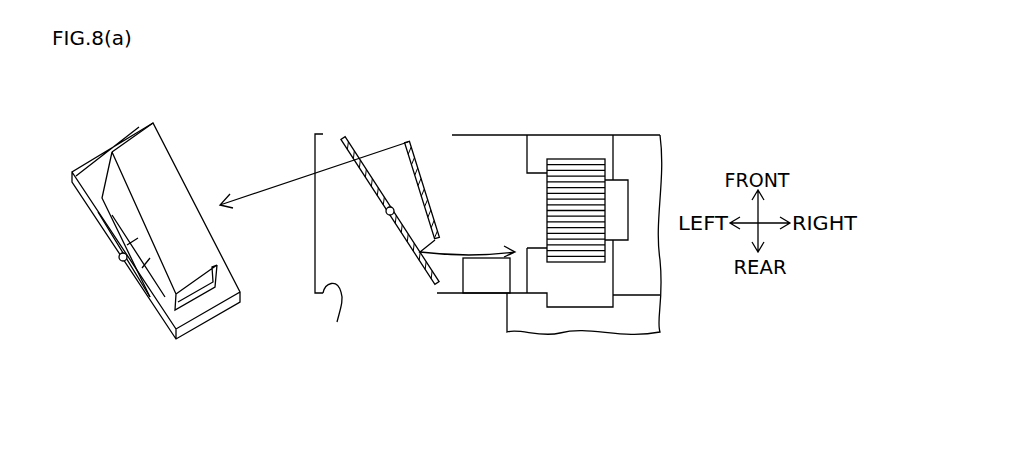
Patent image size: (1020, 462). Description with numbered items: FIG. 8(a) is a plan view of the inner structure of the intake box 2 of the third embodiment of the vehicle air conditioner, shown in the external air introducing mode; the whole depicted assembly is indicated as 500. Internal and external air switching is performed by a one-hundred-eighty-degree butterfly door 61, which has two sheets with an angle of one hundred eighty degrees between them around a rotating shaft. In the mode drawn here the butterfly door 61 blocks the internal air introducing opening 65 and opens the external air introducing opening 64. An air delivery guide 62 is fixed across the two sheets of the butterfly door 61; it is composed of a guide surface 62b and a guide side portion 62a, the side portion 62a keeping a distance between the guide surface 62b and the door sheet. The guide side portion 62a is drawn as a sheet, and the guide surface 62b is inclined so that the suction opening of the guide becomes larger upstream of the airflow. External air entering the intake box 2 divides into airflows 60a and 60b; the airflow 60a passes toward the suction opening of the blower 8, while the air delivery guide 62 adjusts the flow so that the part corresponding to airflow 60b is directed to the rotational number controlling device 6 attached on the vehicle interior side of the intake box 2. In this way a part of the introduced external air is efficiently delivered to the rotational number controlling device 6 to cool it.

The apparatus main body 500 is at (700, 92).
The intake box 2 is at (510, 135).
The blower 8 is at (576, 159).
The rotational number controlling device 6 is at (463, 282).
The 180° butterfly door 61 is at (162, 167).
The air delivery guide 62 is at (432, 206).
The guide side portion 62a is at (127, 270).
The guide surface 62b is at (172, 268).
The external air introducing opening 64 is at (323, 134).
The internal air introducing opening 65 is at (336, 316).
The airflow 60a is at (508, 193).
The airflow 60b is at (371, 158).